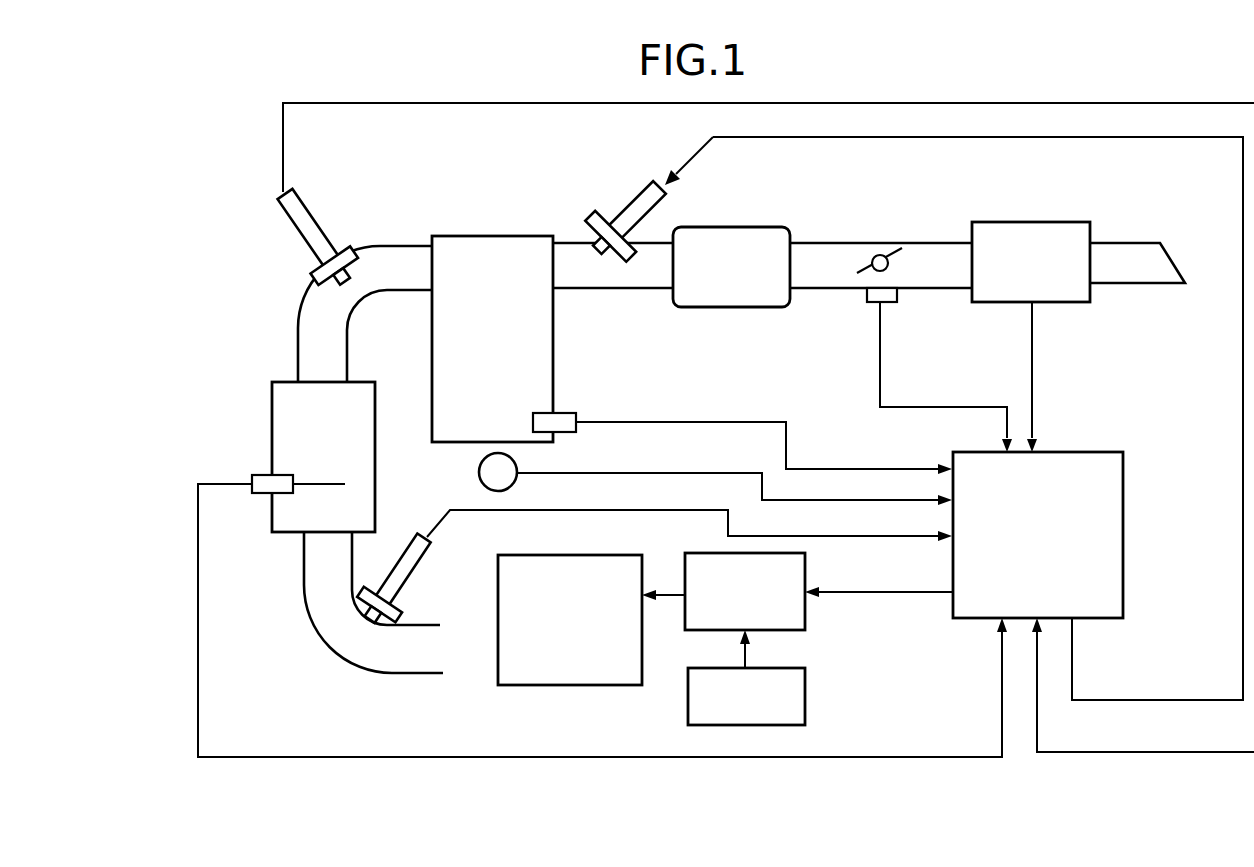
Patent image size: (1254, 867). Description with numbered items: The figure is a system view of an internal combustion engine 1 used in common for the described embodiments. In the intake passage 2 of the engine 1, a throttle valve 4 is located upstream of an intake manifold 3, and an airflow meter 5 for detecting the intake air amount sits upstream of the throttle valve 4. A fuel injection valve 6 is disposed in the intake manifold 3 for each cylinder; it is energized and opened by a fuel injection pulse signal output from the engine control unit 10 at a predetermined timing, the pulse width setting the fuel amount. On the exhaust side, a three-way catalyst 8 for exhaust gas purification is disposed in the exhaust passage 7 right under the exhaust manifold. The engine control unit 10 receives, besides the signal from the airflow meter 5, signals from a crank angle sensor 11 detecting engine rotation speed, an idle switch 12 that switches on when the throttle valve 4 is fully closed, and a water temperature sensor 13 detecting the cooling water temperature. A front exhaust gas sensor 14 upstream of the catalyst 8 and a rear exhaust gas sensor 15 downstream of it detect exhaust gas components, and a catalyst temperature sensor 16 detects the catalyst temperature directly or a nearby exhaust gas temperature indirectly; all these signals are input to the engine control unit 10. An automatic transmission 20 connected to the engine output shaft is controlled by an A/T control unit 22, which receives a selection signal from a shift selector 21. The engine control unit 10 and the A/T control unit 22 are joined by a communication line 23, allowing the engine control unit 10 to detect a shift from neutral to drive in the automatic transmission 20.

The engine 1 is at (452, 205).
The intake passage 2 is at (1137, 243).
The intake manifold 3 is at (720, 308).
The throttle valve 4 is at (885, 252).
The airflow meter 5 is at (1055, 303).
The fuel injection valve 6 is at (627, 200).
The exhaust passage 7 is at (298, 341).
The three-way catalyst 8 is at (272, 408).
The engine control unit 10 is at (1090, 452).
The crank angle sensor 11 is at (479, 472).
The idle switch 12 is at (886, 305).
The water temperature sensor 13 is at (560, 413).
The front exhaust gas sensor 14 is at (296, 237).
The rear exhaust gas sensor 15 is at (414, 566).
The catalyst temperature sensor 16 is at (250, 475).
The automatic transmission 20 is at (570, 686).
The shift selector 21 is at (806, 700).
The A/T control unit 22 is at (806, 572).
The communication line 23 is at (866, 600).